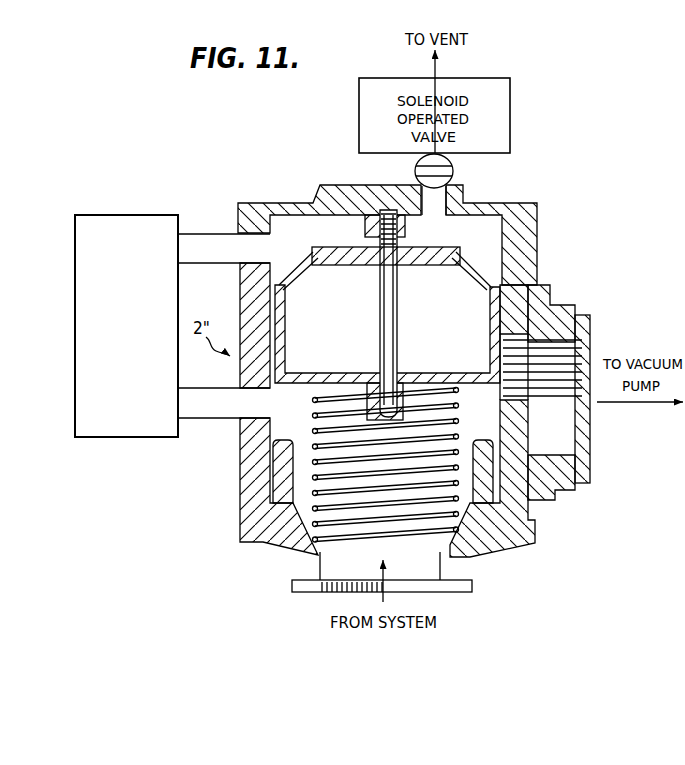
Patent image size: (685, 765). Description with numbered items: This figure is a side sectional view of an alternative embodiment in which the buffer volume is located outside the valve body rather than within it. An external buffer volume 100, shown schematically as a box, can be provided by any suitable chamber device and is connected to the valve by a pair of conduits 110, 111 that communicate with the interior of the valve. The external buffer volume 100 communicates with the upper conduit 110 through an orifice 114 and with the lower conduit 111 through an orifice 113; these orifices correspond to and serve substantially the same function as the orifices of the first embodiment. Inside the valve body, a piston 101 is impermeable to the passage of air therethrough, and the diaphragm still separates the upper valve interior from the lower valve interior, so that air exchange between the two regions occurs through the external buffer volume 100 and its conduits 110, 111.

The external buffer volume 100 is at (111, 213).
The conduit 110 is at (193, 230).
The conduit 111 is at (214, 425).
The orifice 114 is at (176, 248).
The orifice 113 is at (173, 403).
The piston 101 is at (485, 265).